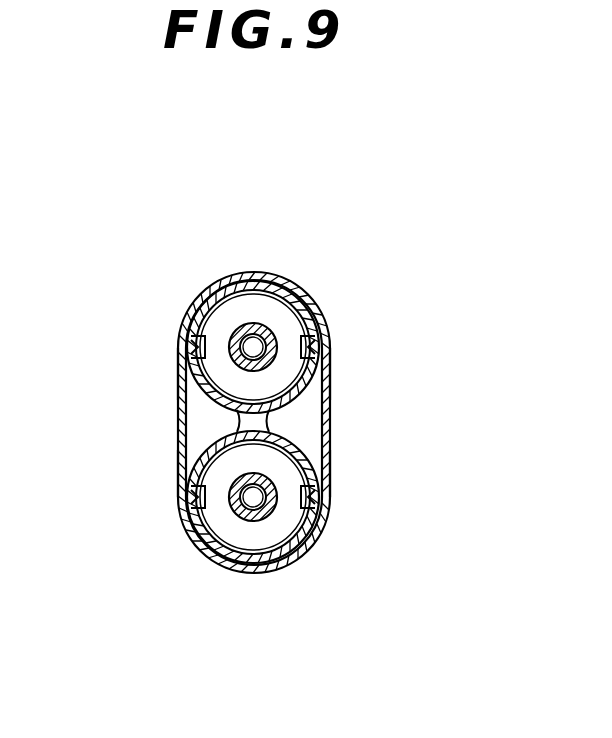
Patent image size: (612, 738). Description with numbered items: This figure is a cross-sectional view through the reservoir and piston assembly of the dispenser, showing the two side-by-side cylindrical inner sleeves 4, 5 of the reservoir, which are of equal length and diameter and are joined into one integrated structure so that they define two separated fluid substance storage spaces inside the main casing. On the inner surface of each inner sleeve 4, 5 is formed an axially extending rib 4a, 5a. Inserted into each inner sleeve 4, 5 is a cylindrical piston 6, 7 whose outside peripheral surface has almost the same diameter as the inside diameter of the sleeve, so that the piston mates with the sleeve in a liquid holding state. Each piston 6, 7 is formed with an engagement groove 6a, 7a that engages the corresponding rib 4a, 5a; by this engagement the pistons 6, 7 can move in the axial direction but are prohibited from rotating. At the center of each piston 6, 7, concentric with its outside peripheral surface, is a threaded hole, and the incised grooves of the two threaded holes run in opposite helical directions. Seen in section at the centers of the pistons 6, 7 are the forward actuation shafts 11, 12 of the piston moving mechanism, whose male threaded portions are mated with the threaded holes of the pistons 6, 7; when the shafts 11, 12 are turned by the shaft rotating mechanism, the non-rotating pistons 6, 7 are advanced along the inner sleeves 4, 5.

The inner sleeve 4 is at (265, 278).
The inner sleeve 5 is at (278, 568).
The rib 4a is at (186, 352).
The rib 5a is at (188, 495).
The piston 6 is at (215, 385).
The piston 7 is at (278, 448).
The engagement groove 6a is at (188, 310).
The engagement groove 7a is at (190, 527).
The forward actuation shaft 11 is at (252, 345).
The forward actuation shaft 12 is at (252, 500).